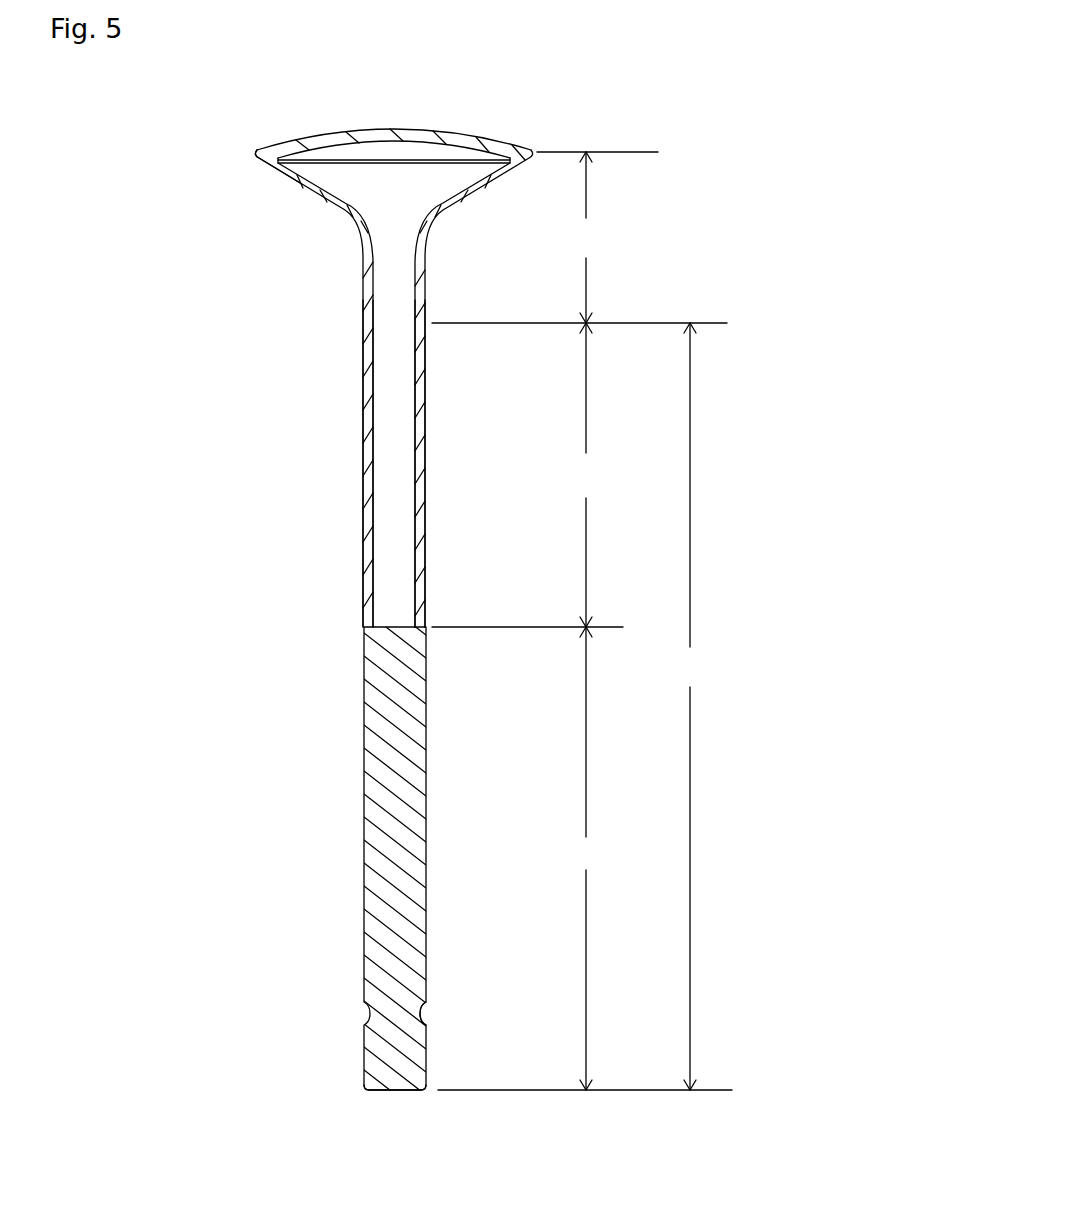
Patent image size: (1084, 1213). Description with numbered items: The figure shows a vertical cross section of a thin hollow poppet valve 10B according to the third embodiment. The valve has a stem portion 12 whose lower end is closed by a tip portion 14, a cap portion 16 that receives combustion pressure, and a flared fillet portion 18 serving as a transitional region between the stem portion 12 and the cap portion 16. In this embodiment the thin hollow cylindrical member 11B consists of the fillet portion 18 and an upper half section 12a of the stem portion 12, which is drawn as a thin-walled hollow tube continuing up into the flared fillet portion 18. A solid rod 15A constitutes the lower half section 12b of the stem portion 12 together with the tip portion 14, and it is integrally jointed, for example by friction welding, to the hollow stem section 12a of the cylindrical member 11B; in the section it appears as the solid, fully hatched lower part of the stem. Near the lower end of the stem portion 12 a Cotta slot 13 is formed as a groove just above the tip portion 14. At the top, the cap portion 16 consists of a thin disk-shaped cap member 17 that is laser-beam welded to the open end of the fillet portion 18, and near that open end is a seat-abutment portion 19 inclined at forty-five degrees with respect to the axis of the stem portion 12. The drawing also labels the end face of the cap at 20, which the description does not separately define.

The hollow poppet valve 10B is at (335, 413).
The cap portion 16 is at (393, 349).
The cap member 17 is at (416, 132).
The head end face 20 is at (368, 158).
The seat-abutment portion 19 is at (260, 160).
The fillet portion 18 is at (597, 237).
The thin hollow cylindrical member 11B is at (545, 389).
The stem portion 12 is at (502, 737).
The upper half section of the stem portion 12a is at (579, 475).
The lower half section of the stem portion 12b is at (582, 858).
The solid rod 15A is at (365, 823).
The Cotta slot 13 is at (422, 1018).
The tip portion 14 is at (383, 1092).